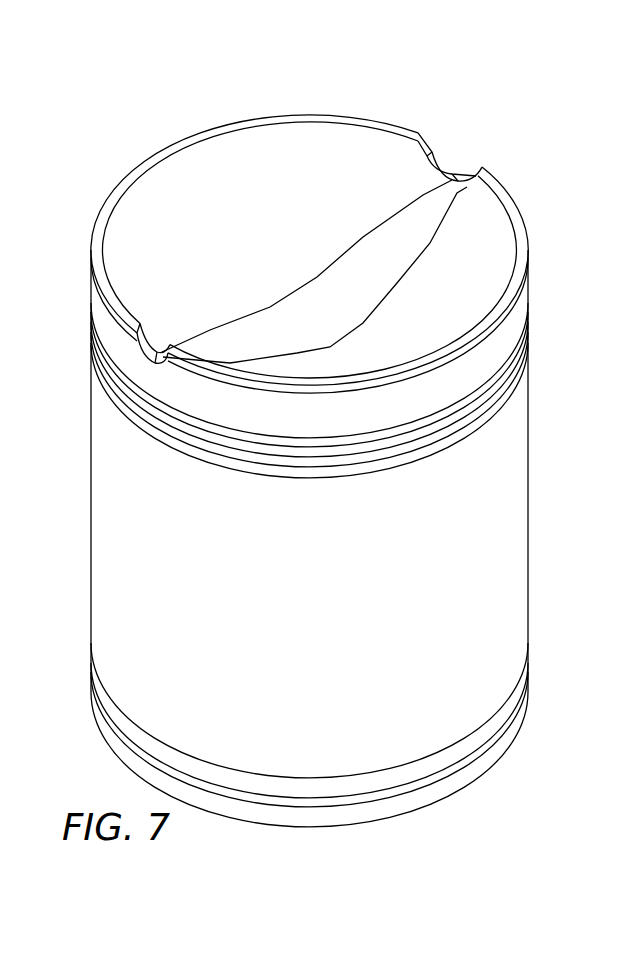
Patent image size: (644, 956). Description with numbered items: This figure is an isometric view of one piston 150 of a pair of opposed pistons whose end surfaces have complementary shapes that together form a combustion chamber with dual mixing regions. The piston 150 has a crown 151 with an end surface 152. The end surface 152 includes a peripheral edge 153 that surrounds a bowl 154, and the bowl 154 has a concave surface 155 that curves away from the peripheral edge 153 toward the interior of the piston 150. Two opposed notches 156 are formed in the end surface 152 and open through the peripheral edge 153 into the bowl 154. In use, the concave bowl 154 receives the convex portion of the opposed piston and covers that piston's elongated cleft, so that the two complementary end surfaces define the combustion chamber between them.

The container 150 is at (543, 523).
The side wall 151 is at (513, 325).
The top opening 152 is at (365, 150).
The rim 153 is at (513, 222).
The interior cavity 154 is at (278, 195).
The bottom surface 155 is at (232, 257).
The notch 156 is at (463, 172).